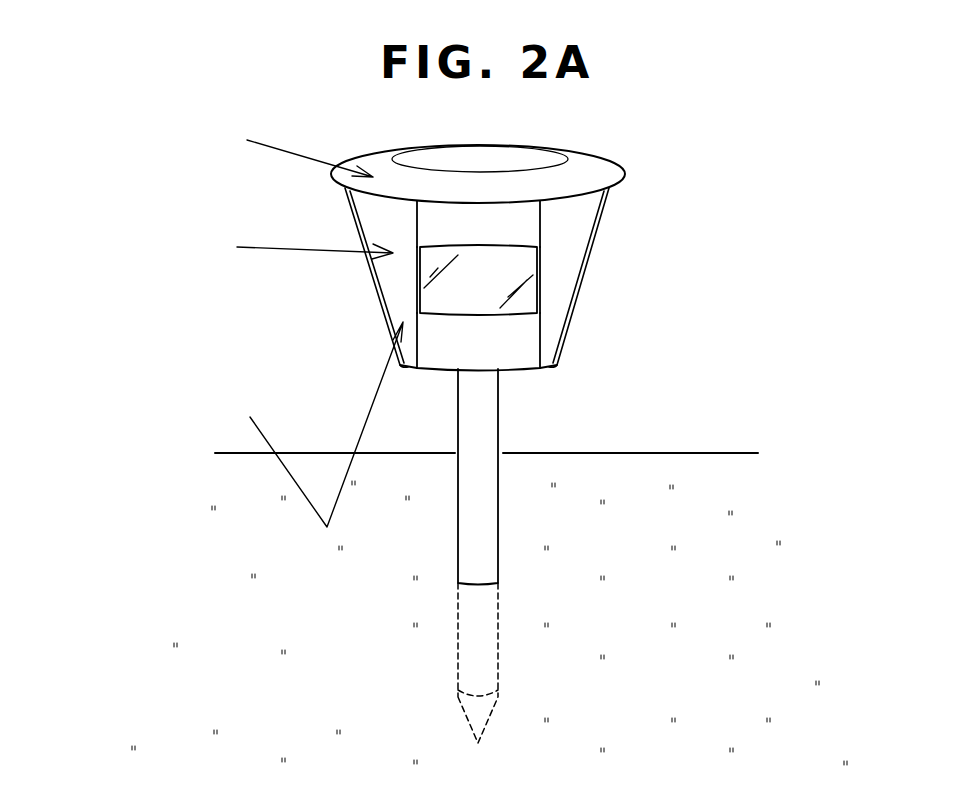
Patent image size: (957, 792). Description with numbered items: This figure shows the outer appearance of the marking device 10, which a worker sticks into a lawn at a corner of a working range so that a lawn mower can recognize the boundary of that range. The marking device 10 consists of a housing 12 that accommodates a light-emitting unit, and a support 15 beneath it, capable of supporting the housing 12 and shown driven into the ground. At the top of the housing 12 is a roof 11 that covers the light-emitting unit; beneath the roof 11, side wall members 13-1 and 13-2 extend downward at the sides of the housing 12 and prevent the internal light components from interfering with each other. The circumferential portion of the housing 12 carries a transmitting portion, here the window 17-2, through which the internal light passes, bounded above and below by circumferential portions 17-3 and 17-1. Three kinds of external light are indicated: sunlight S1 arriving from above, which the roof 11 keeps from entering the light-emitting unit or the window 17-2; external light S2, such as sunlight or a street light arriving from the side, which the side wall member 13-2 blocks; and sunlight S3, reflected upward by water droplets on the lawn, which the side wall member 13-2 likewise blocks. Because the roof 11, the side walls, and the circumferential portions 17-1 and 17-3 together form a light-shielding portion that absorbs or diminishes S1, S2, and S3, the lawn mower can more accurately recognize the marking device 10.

The marking device 10 is at (701, 114).
The roof 11 is at (580, 172).
The housing 12 is at (712, 157).
The side wall member 13-1 is at (578, 210).
The side wall member 13-2 is at (368, 217).
The support 15 is at (490, 430).
The circumferential portion 17-1 is at (520, 343).
The window 17-2 is at (493, 282).
The circumferential portion 17-3 is at (500, 227).
The sunlight S1 is at (300, 153).
The external light S2 is at (265, 250).
The sunlight S3 is at (367, 423).